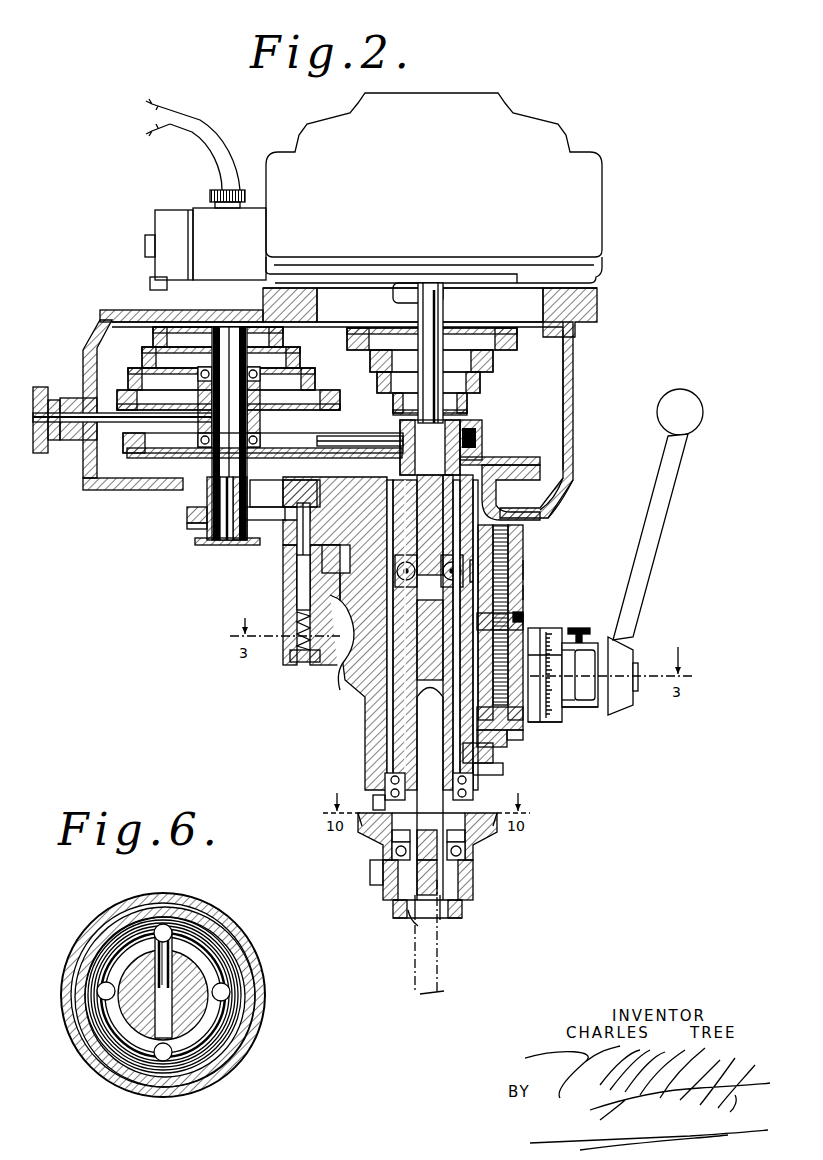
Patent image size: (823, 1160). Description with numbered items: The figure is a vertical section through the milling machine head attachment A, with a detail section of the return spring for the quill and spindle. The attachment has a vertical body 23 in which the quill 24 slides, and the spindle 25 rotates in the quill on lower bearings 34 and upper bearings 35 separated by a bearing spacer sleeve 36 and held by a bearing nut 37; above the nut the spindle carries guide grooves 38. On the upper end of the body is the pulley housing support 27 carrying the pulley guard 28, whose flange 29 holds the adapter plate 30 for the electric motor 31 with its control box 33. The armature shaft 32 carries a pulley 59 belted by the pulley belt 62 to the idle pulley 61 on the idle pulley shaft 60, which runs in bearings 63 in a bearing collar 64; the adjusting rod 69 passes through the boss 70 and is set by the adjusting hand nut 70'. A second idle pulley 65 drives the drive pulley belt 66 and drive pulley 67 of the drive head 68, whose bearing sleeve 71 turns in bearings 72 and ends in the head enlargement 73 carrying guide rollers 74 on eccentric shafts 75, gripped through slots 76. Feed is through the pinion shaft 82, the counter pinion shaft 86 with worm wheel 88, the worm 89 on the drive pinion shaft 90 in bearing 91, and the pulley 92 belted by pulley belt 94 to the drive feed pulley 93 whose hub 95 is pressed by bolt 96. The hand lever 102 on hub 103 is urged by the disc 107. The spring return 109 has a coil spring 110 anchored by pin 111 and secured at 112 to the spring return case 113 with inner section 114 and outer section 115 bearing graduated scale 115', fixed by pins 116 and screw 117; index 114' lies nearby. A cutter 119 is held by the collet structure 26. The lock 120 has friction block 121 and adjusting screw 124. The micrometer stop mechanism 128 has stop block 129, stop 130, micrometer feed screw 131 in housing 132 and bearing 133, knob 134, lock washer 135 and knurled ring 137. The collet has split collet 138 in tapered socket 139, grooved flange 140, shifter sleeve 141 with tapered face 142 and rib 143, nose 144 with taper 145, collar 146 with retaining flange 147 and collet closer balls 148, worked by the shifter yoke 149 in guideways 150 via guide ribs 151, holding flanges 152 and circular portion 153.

In FIG. 2, the vertical body 23 is at (365, 715).
In FIG. 2, the quill 24 is at (376, 736).
In FIG. 2, the spindle 25 is at (382, 762).
In FIG. 2, the collet structure 26 is at (382, 878).
In FIG. 2, the pulley housing support 27 is at (530, 514).
In FIG. 2, the pulley guard 28 is at (574, 398).
In FIG. 2, the flange or collar 29 is at (585, 308).
In FIG. 2, the adapter plate 30 is at (596, 287).
In FIG. 2, the electric motor 31 is at (595, 203).
In FIG. 2, the armature shaft 32 is at (436, 312).
In FIG. 2, the control box 33 is at (253, 236).
In FIG. 2, the lower bearings 34 is at (388, 778).
In FIG. 2, the upper bearings 35 is at (522, 582).
In FIG. 2, the bearing spacer sleeve 36 is at (494, 770).
In FIG. 2, the bearing nut 37 is at (524, 566).
In FIG. 2, the guide grooves 38 is at (450, 428).
In FIG. 2, the pulley 59 is at (498, 370).
In FIG. 2, the idle pulley shaft 60 is at (228, 327).
In FIG. 2, the idle pulley 61 is at (327, 330).
In FIG. 2, the pulley belt 62 is at (310, 350).
In FIG. 2, the bearings 63 is at (262, 393).
In FIG. 2, the bearing collar 64 is at (258, 420).
In FIG. 2, the second idle pulley 65 is at (322, 435).
In FIG. 2, the drive pulley belt 66 is at (345, 444).
In FIG. 2, the drive pulley 67 is at (479, 434).
In FIG. 2, the drive head 68 is at (395, 420).
In FIG. 2, the adjusting rod 69 is at (75, 400).
In FIG. 2, the boss 70 is at (123, 439).
In FIG. 2, the adjusting hand nut 70' is at (38, 401).
In FIG. 2, the bearing sleeve 71 is at (470, 497).
In FIG. 2, the bearings 72 is at (480, 461).
In FIG. 2, the head enlargement 73 is at (396, 565).
In FIG. 2, the guide rollers 74 is at (398, 576).
In FIG. 2, the eccentric shaft 75 is at (405, 583).
In FIG. 2, the slots 76 is at (478, 571).
In FIG. 6, the pinion shaft 82 is at (202, 1017).
In FIG. 2, the counter pinion shaft 86 is at (330, 672).
In FIG. 2, the worm wheel 88 is at (312, 631).
In FIG. 2, the worm 89 is at (290, 666).
In FIG. 2, the drive pinion shaft 90 is at (300, 565).
In FIG. 2, the bearing 91 is at (285, 590).
In FIG. 2, the pulley 92 is at (265, 548).
In FIG. 2, the drive feed pulley 93 is at (200, 512).
In FIG. 2, the pulley belt 94 is at (205, 527).
In FIG. 2, the hub 95 is at (205, 488).
In FIG. 2, the bolt 96 is at (222, 545).
In FIG. 2, the hand lever 102 is at (644, 566).
In FIG. 2, the hub 103 is at (625, 655).
In FIG. 2, the disc 107 is at (638, 692).
In FIG. 6, the spring return 109 is at (220, 935).
In FIG. 6, the coil spring 110 is at (100, 1042).
In FIG. 6, the pin 111 is at (170, 975).
In FIG. 6, the spring anchorage 112 is at (85, 1002).
In FIG. 2, the spring return case 113 is at (553, 630).
In FIG. 6, the spring return case 113 is at (65, 975).
In FIG. 2, the inner section 114 is at (566, 657).
In FIG. 6, the inner section 114 is at (163, 984).
In FIG. 2, the dial index line 114' is at (563, 656).
In FIG. 2, the outer section 115 is at (570, 738).
In FIG. 6, the outer section 115 is at (197, 995).
In FIG. 2, the graduated scale 115' is at (588, 721).
In FIG. 6, the pins 116 is at (230, 992).
In FIG. 2, the screw 117 is at (593, 630).
In FIG. 2, the milling cutter 119 is at (432, 972).
In FIG. 2, the lock 120 is at (520, 748).
In FIG. 2, the friction block 121 is at (445, 742).
In FIG. 2, the adjusting screw 124 is at (432, 687).
In FIG. 2, the micrometer stop mechanism 128 is at (516, 615).
In FIG. 2, the stop block 129 is at (509, 542).
In FIG. 2, the stop 130 is at (525, 592).
In FIG. 2, the micrometer feed screw 131 is at (526, 618).
In FIG. 2, the housing 132 is at (525, 572).
In FIG. 2, the bearing 133 is at (525, 768).
In FIG. 2, the knurled finger knob 134 is at (522, 742).
In FIG. 2, the lock washer 135 is at (524, 722).
In FIG. 2, the threaded knurled ring 137 is at (556, 708).
In FIG. 2, the split collet 138 is at (443, 922).
In FIG. 2, the tapered socket 139 is at (416, 912).
In FIG. 2, the annular grooved flange 140 is at (476, 870).
In FIG. 2, the shifter sleeve 141 is at (385, 848).
In FIG. 2, the tapered bearing face 142 is at (372, 872).
In FIG. 2, the annular rib 143 is at (475, 850).
In FIG. 2, the collet closer nose 144 is at (465, 910).
In FIG. 2, the tapered inner periphery 145 is at (418, 928).
In FIG. 2, the collar 146 is at (476, 882).
In FIG. 2, the retaining flange 147 is at (473, 862).
In FIG. 2, the collet closer balls 148 is at (392, 855).
In FIG. 2, the shifter yoke 149 is at (485, 840).
In FIG. 2, the guideways 150 is at (486, 786).
In FIG. 2, the guide ribs 151 is at (362, 800).
In FIG. 2, the holding flanges 152 is at (427, 845).
In FIG. 2, the circular portion 153 is at (427, 877).
In FIG. 2, the milling machine head attachment A is at (575, 380).